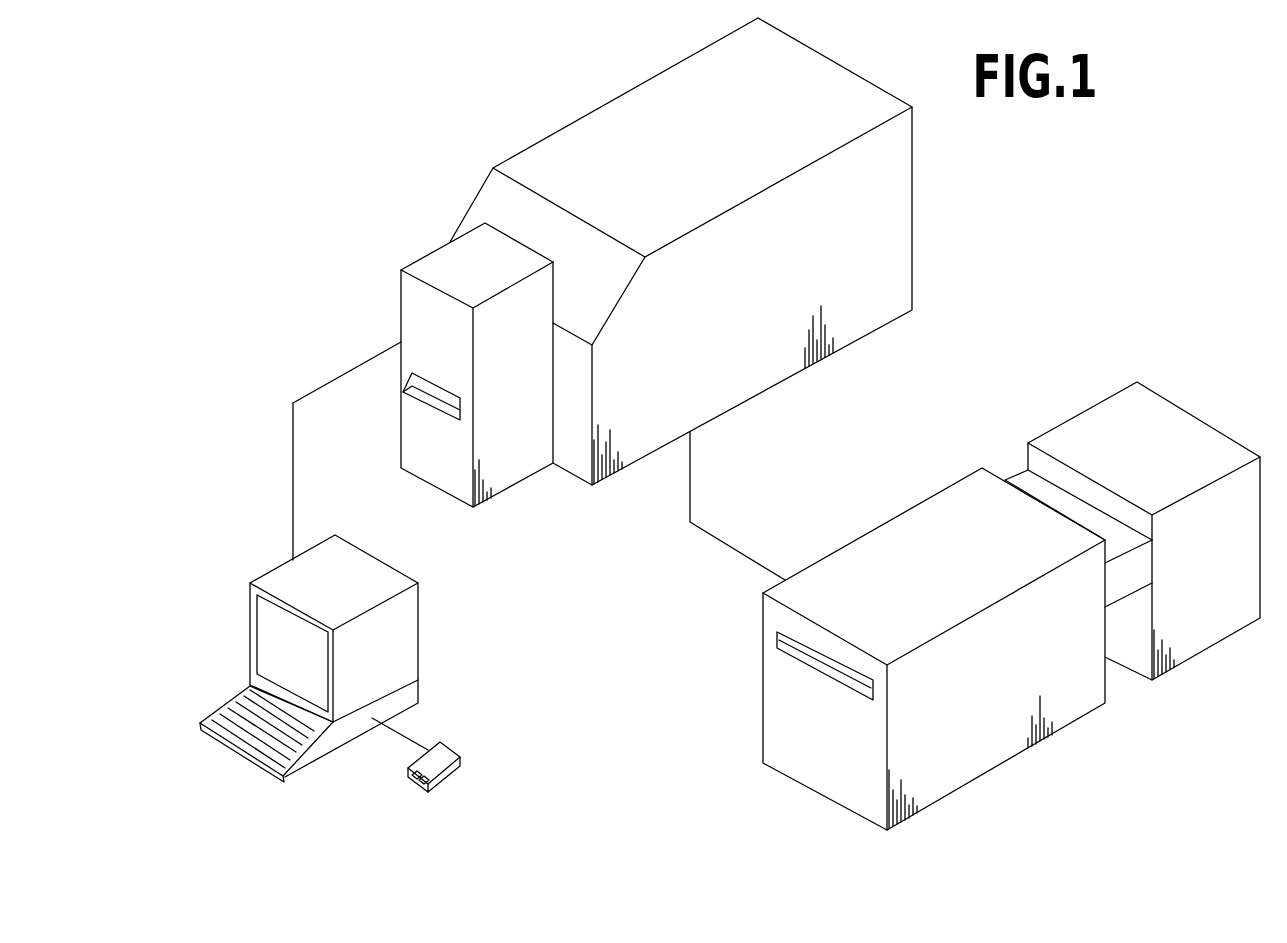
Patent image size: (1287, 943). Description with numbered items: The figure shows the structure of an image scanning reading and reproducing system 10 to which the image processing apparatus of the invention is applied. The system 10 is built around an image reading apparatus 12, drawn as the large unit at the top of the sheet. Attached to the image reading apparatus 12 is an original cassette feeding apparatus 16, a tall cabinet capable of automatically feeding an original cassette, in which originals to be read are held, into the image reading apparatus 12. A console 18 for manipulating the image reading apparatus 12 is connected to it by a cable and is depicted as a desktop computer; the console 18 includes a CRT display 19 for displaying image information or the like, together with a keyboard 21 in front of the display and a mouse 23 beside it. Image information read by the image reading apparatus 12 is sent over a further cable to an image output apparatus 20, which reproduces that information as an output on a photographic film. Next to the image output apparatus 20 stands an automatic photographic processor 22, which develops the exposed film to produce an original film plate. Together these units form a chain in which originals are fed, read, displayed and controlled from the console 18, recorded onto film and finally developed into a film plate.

The image scanning reading and reproducing system 10 is at (520, 124).
The image reading apparatus 12 is at (898, 227).
The original cassette feeding apparatus 16 is at (420, 267).
The console 18 is at (335, 671).
The CRT display 19 is at (262, 620).
The image output apparatus 20 is at (912, 512).
The keyboard 21 is at (303, 767).
The automatic photographic processor 22 is at (1060, 438).
The mouse 23 is at (455, 755).